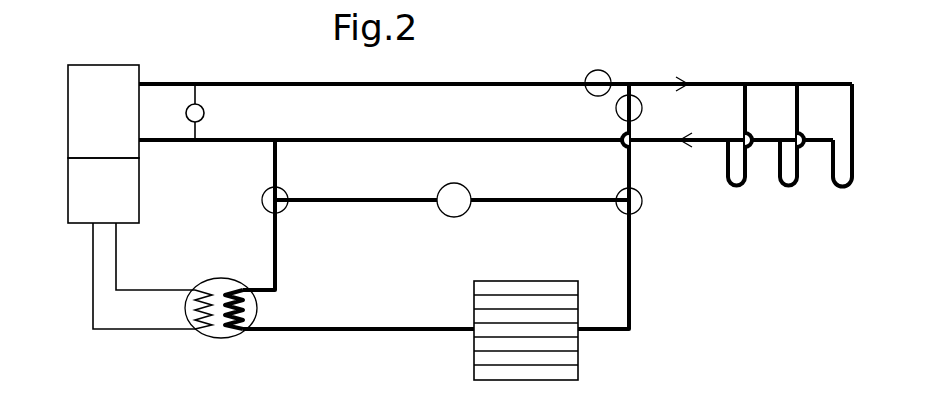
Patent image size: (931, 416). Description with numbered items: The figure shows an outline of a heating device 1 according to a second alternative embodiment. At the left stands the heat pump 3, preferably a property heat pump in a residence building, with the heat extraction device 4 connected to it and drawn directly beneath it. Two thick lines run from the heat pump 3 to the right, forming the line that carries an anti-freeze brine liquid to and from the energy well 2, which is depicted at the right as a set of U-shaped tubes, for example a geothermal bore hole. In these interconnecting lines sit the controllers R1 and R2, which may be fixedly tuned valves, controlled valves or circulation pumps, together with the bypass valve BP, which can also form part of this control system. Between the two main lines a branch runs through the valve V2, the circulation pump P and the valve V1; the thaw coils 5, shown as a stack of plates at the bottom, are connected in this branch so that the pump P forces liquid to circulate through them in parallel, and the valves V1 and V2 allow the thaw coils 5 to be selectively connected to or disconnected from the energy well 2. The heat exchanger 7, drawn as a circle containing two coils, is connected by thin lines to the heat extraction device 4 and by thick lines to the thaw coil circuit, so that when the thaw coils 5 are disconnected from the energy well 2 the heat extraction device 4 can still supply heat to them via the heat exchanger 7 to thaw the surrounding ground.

The heating device 1 is at (682, 292).
The energy well 2 is at (797, 198).
The heat pump 3 is at (120, 75).
The heat extraction device 4 is at (80, 192).
The thaw coils 5 is at (578, 355).
The heat exchanger 7 is at (214, 340).
The bypass valve BP is at (214, 112).
The valve V1 is at (646, 195).
The valve V2 is at (260, 194).
The circulation pump P is at (454, 200).
The controller R1 is at (597, 69).
The controller R2 is at (646, 108).